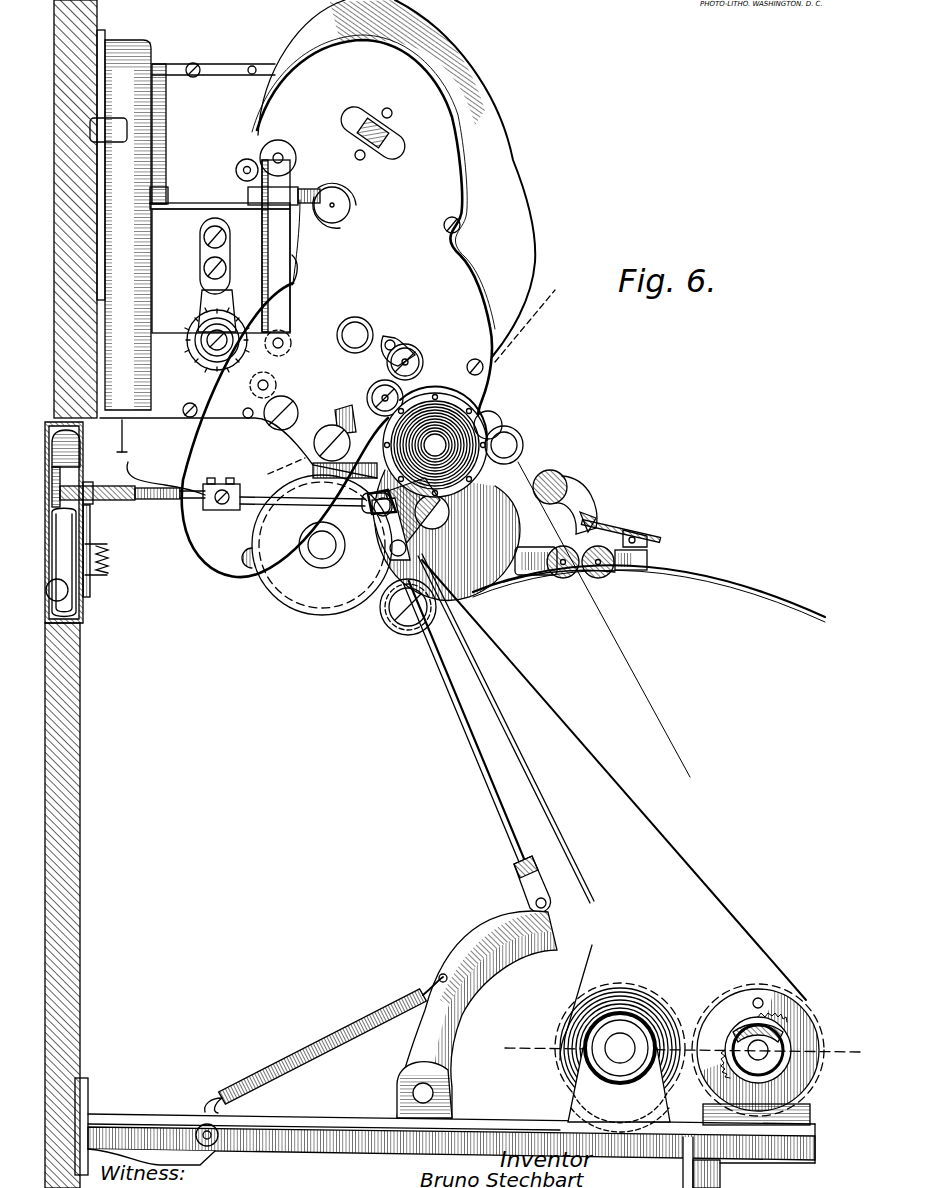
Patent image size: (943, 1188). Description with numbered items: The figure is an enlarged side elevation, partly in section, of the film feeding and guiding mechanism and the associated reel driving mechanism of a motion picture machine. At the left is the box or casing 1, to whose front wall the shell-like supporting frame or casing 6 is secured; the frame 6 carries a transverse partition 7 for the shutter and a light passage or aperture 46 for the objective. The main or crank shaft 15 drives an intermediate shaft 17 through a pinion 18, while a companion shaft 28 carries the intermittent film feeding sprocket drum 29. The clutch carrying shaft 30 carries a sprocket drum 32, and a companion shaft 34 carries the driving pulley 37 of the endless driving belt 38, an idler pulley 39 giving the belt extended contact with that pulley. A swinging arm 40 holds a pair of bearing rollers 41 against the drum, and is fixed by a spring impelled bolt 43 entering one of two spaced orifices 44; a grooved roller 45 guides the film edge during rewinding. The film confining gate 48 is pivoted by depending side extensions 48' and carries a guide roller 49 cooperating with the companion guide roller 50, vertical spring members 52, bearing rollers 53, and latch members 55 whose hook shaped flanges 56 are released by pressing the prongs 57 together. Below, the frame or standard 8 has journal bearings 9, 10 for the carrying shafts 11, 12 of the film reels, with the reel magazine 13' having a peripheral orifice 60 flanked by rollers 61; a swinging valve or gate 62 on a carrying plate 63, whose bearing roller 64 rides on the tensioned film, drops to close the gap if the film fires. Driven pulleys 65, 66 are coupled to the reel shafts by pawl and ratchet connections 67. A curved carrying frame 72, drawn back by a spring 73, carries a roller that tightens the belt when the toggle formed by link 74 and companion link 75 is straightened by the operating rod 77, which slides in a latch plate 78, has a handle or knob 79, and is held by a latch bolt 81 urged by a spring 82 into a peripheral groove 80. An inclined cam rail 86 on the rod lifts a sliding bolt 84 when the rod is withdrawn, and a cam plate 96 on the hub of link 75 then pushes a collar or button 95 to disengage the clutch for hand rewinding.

The box or casing 1 is at (65, 157).
The supporting frame or casing 6 is at (445, 181).
The transverse partition 7 is at (128, 225).
The frame or standard 8 is at (290, 1148).
The journal bearing 9 is at (568, 1100).
The journal bearing 10 is at (810, 1110).
The carrying shaft 11 is at (620, 1063).
The carrying shaft 12 is at (750, 1055).
The reel magazine 13' is at (649, 587).
The main or crank shaft 15 is at (358, 318).
The intermediate shaft 17 is at (350, 206).
The pinion 18 is at (380, 388).
The companion shaft 28 is at (230, 338).
The intermittent film feeding sprocket drum 29 is at (200, 310).
The clutch carrying shaft 30 is at (447, 496).
The sprocket drum 32 is at (478, 405).
The companion shaft 34 is at (322, 568).
The driving pulley 37 is at (285, 590).
The endless driving belt 38 is at (524, 698).
The idler pulley 39 is at (388, 622).
The swinging arm 40 is at (347, 408).
The bearing roller 41 is at (420, 357).
The spring impelled bolt 43 is at (467, 366).
The spaced orifice 44 is at (393, 338).
The peripherally grooved roller 45 is at (392, 146).
The light passage or aperture 46 is at (196, 210).
The film confining gate 48 is at (297, 246).
The depending side extension 48' is at (288, 381).
The guide roller 49 is at (284, 142).
The companion guide roller 50 is at (237, 167).
The vertical spring member 52 is at (296, 278).
The bearing roller 53 is at (288, 345).
The latch member 55 is at (316, 190).
The hook shaped flange 56 is at (290, 186).
The outturned prong or finger piece 57 is at (345, 190).
The peripheral orifice 60 is at (580, 578).
The guide and friction reducing roller 61 is at (555, 574).
The swinging valve or gate 62 is at (596, 520).
The carrying plate or frame 63 is at (636, 530).
The bearing roller 64 is at (565, 478).
The driven pulley 65 is at (645, 988).
The driven pulley 66 is at (798, 1000).
The pawl and ratchet connection 67 is at (742, 1028).
The carrying frame 72 is at (475, 948).
The spring 73 is at (310, 1060).
The link 74 is at (468, 740).
The companion link 75 is at (378, 540).
The operating rod 77 is at (284, 504).
The latch plate 78 is at (64, 522).
The operating handle or knob 79 is at (65, 486).
The peripheral groove 80 is at (95, 486).
The latch bolt 81 is at (91, 521).
The spring 82 is at (109, 560).
The sliding bolt 84 is at (128, 430).
The inclined track or cam rail 86 is at (158, 480).
The collar or button 95 is at (522, 440).
The cam plate 96 is at (500, 418).